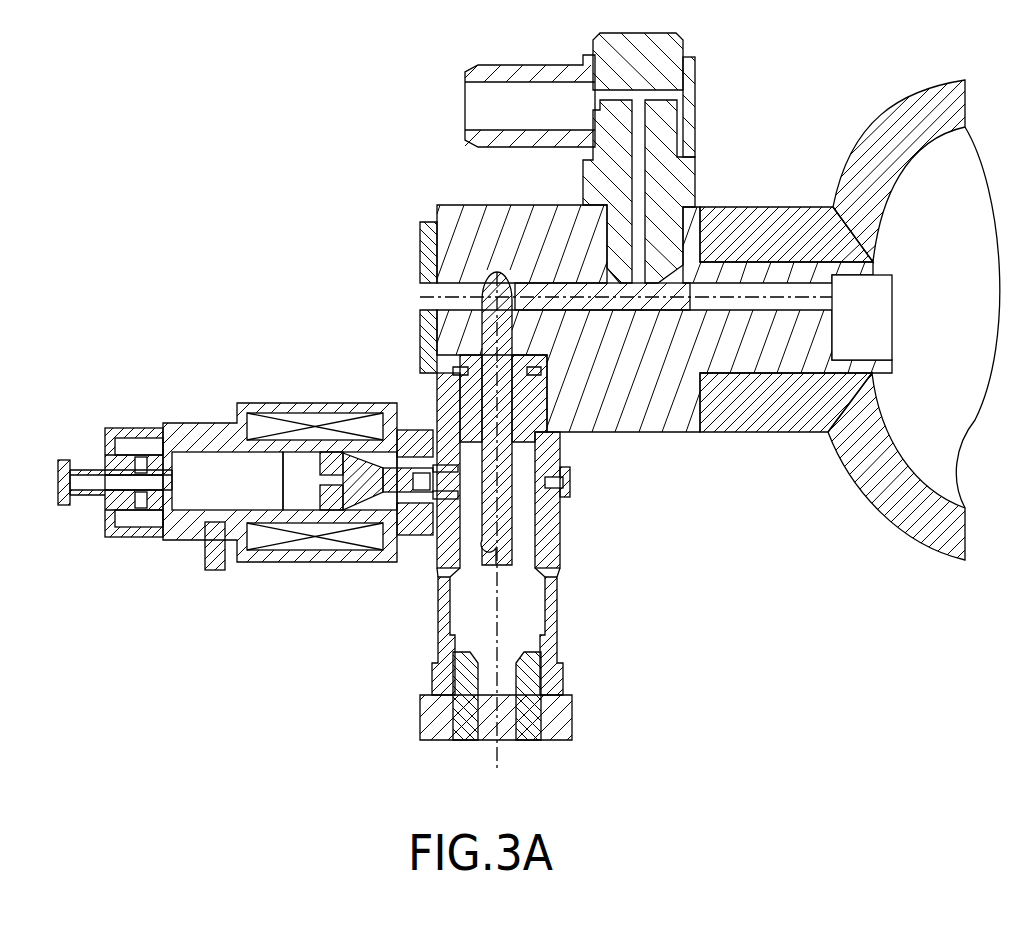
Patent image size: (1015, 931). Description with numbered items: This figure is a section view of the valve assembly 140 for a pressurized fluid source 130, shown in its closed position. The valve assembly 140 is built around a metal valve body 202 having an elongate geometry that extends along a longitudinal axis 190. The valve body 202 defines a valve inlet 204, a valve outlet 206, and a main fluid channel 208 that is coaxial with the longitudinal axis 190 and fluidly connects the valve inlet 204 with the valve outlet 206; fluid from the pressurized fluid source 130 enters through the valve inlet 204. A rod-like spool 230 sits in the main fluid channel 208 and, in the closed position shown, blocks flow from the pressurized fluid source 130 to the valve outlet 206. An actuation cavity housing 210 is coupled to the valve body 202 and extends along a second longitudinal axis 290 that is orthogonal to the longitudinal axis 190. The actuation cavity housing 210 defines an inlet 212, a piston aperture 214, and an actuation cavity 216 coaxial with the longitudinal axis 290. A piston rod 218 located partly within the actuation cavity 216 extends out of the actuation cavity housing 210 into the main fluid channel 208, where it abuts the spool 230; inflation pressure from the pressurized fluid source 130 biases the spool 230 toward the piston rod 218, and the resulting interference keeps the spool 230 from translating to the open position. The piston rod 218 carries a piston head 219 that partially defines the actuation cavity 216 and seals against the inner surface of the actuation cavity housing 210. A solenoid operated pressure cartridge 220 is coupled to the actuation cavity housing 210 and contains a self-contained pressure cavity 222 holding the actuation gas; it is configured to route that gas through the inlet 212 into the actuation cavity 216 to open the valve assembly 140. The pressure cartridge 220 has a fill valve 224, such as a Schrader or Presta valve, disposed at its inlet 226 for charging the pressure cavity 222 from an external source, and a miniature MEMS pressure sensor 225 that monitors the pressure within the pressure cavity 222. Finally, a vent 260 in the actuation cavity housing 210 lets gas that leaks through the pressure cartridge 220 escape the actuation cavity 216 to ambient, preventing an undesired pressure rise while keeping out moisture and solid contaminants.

The pressurized fluid source 130 is at (962, 314).
The valve assembly 140 is at (294, 106).
The longitudinal axis 190 is at (420, 297).
The valve body 202 is at (452, 205).
The valve inlet 204 is at (867, 277).
The valve outlet 206 is at (668, 210).
The main fluid channel 208 is at (762, 312).
The actuation cavity housing 210 is at (557, 620).
The inlet 212 is at (443, 527).
The piston aperture 214 is at (480, 410).
The actuation cavity 216 is at (540, 492).
The piston rod 218 is at (483, 348).
The piston head 219 is at (522, 537).
The pressure cartridge 220 is at (195, 425).
The pressure cavity 222 is at (244, 499).
The fill valve 224 is at (69, 450).
The pressure sensor 225 is at (212, 570).
The inlet 226 is at (140, 455).
The spool 230 is at (697, 290).
The vent 260 is at (590, 482).
The longitudinal axis 290 is at (497, 745).